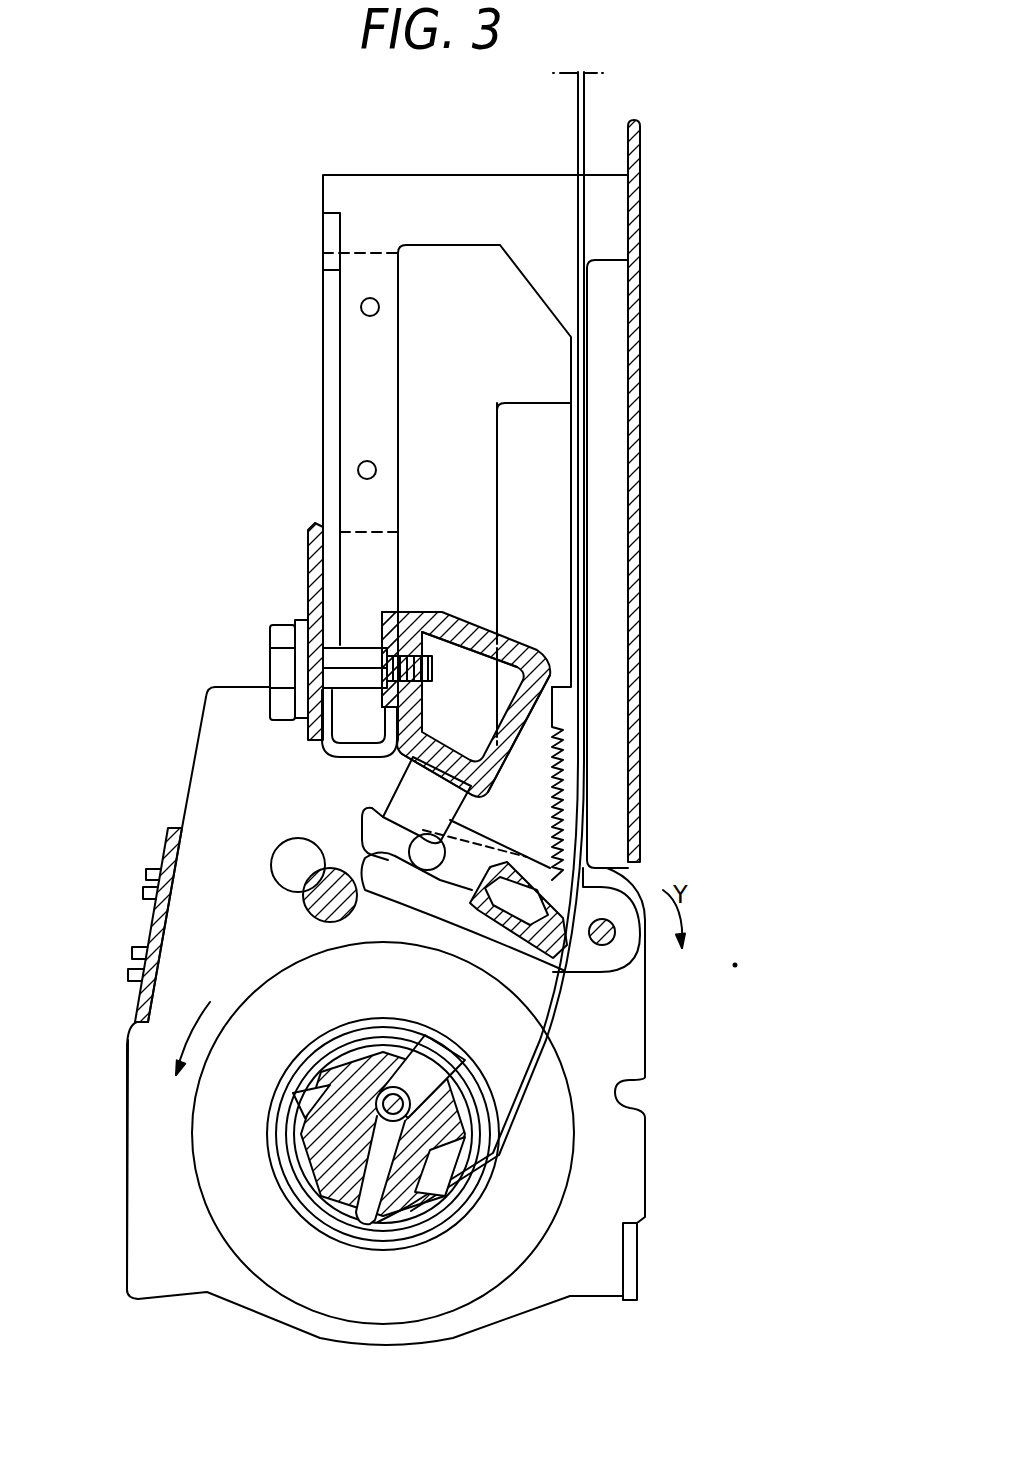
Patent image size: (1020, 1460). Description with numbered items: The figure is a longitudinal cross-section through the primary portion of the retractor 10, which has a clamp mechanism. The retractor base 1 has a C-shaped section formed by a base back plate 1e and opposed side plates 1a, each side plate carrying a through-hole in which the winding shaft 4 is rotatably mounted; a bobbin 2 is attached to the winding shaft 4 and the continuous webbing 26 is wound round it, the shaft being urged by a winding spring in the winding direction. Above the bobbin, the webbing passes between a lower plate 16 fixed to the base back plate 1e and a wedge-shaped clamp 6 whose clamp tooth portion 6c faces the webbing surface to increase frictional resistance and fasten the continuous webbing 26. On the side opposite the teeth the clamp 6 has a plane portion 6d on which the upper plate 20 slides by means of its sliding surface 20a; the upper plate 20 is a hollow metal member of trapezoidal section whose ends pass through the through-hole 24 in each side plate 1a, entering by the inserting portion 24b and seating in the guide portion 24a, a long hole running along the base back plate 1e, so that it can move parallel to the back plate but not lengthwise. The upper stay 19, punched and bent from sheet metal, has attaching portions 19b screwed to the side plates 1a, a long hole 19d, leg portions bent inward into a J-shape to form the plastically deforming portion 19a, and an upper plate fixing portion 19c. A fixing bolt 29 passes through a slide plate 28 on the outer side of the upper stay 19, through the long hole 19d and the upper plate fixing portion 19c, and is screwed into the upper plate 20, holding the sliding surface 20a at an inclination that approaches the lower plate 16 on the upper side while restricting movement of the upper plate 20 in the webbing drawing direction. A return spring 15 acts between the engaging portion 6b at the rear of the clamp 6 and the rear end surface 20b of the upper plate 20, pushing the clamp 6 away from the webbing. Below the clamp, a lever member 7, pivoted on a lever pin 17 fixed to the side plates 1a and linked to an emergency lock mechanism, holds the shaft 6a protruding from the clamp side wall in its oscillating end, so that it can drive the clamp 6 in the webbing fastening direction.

The retractor base 1 is at (193, 773).
The side plate 1a is at (143, 1108).
The base back plate 1e is at (632, 405).
The bobbin 2 is at (208, 1222).
The winding shaft 4 is at (380, 1228).
The clamp 6 is at (513, 813).
The shaft 6a is at (425, 870).
The engaging portion 6b is at (363, 830).
The clamp tooth portion 6c is at (553, 774).
The plane portion 6d is at (550, 752).
The lever member 7 is at (593, 975).
The retractor 10 is at (198, 742).
The return spring 15 is at (405, 795).
The lower plate 16 is at (608, 476).
The lever pin 17 is at (615, 937).
The upper stay 19 is at (322, 348).
The plastically deforming portion 19a is at (323, 748).
The attaching portion 19b is at (372, 250).
The upper plate fixing portion 19c is at (380, 637).
The long hole 19d is at (326, 427).
The upper plate 20 is at (513, 637).
The sliding surface 20a is at (550, 705).
The rear end surface 20b is at (405, 768).
The through-hole 24 is at (494, 475).
The guide portion 24a is at (400, 493).
The inserting portion 24b is at (530, 400).
The continuous webbing 26 is at (585, 113).
The slide plate 28 is at (304, 573).
The fixing bolt 29 is at (268, 652).